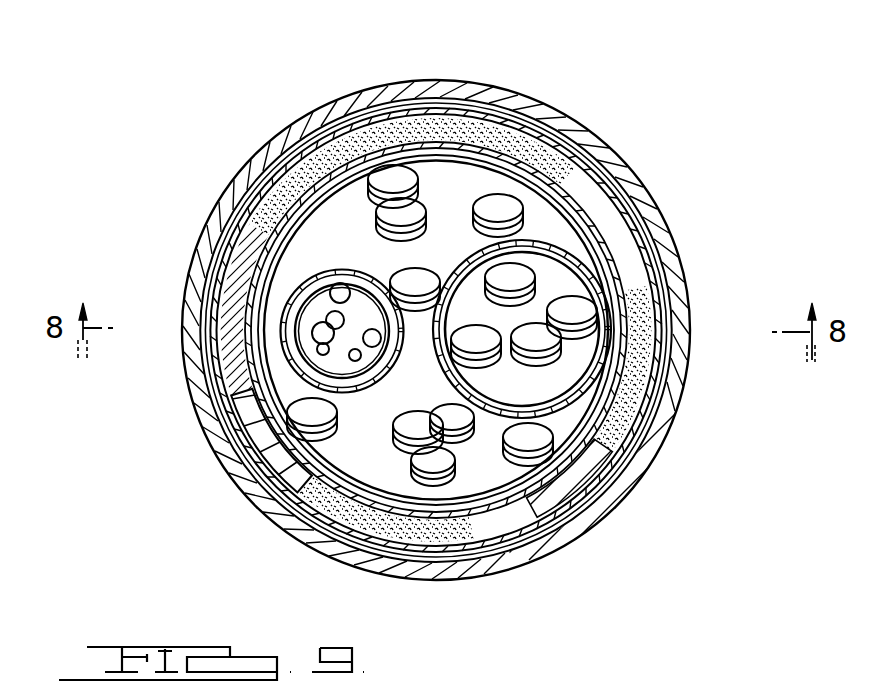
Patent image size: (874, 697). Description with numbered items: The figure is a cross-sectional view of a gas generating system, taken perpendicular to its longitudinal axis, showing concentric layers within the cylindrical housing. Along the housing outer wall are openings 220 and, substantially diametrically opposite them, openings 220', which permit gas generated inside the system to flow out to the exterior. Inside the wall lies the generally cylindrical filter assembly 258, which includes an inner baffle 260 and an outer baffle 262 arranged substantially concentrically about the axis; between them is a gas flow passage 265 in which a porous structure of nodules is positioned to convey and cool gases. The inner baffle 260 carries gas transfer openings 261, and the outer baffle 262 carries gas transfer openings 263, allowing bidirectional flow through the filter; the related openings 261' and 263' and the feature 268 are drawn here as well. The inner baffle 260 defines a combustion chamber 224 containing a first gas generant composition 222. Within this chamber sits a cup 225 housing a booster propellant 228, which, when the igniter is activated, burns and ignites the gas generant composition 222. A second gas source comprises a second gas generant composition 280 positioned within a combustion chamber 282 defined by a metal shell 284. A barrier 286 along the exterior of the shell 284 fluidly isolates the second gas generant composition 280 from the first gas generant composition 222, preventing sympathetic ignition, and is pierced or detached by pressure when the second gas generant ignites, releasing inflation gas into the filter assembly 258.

The openings 220 is at (436, 300).
The openings 220' is at (528, 351).
The gas transfer openings 261 is at (436, 275).
The inner sheath layer (bottom portion) 261' is at (386, 549).
The combustion chamber 224 is at (505, 135).
The inner baffle 260 is at (615, 185).
The shell 284 is at (593, 280).
The gas transfer openings 263 is at (493, 330).
The armor wire layer (second) 263' is at (391, 330).
The combustion chamber 282 is at (585, 348).
The binder layer 268 is at (266, 218).
The cup 225 is at (280, 322).
The booster propellant 228 is at (372, 346).
The filter assembly 258 is at (225, 398).
The outer baffle 262 is at (235, 451).
The gas flow passage 265 is at (605, 439).
The second gas generant composition 280 is at (483, 366).
The barrier 286 is at (455, 274).
The gas generant composition 222 is at (430, 215).